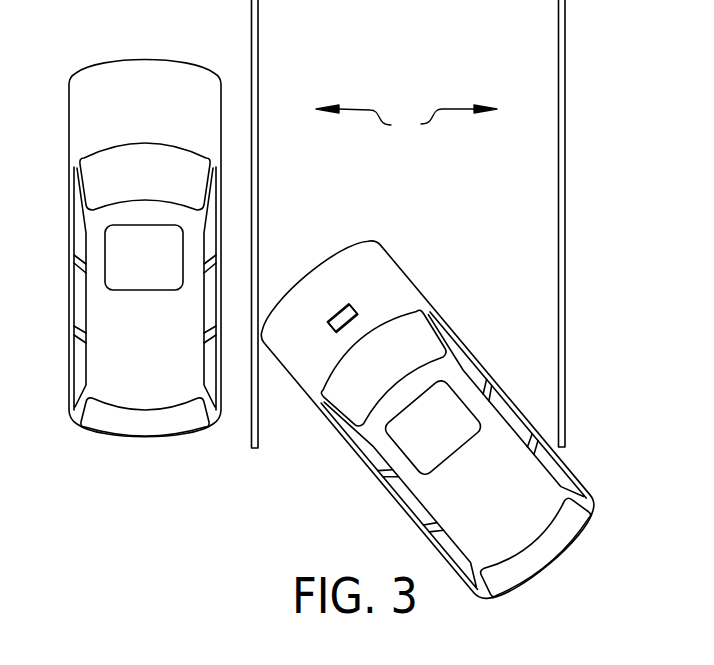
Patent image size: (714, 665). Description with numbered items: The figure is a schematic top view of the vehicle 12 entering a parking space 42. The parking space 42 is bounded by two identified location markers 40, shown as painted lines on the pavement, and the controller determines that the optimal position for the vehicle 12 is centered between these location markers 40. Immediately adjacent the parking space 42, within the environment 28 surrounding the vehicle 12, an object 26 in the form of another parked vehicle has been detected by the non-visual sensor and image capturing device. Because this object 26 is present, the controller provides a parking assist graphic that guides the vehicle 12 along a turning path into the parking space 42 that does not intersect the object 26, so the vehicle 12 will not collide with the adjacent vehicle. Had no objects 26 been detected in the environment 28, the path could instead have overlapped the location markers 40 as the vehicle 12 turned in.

The vehicle 12 is at (505, 500).
The object 26 is at (145, 50).
The environment 28 is at (159, 478).
The location marker 40 is at (258, 30).
The parking space 42 is at (406, 122).